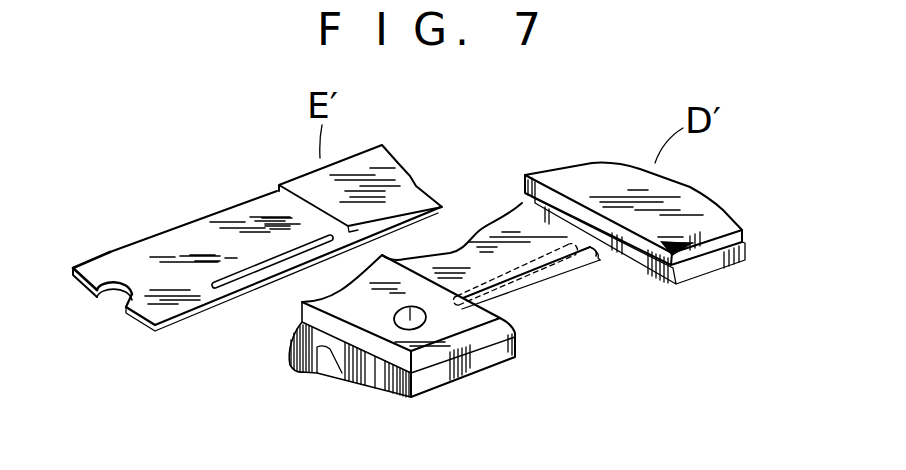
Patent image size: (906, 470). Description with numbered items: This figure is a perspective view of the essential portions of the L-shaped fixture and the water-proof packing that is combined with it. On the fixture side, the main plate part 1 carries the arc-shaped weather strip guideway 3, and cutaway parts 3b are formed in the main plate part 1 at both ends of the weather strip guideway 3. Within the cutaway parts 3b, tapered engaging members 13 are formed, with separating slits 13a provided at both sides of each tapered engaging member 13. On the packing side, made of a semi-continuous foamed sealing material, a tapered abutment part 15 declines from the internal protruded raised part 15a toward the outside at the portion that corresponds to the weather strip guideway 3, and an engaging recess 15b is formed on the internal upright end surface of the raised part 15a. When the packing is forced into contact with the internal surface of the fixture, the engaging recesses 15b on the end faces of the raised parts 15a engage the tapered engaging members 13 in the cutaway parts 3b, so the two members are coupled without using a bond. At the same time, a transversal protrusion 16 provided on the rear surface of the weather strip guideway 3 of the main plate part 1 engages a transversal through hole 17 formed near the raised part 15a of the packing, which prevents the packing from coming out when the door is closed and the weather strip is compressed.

The main plate part 1 is at (708, 222).
The weather strip guideway 3 is at (515, 225).
The cutaway part 3b is at (560, 292).
The tapered engaging member 13 is at (533, 285).
The separating slit 13a is at (597, 252).
The tapered abutment part 15 is at (225, 230).
The raised part 15a is at (182, 268).
The engaging recess 15b is at (207, 283).
The transversal protrusion 16 is at (474, 312).
The transversal through hole 17 is at (260, 268).